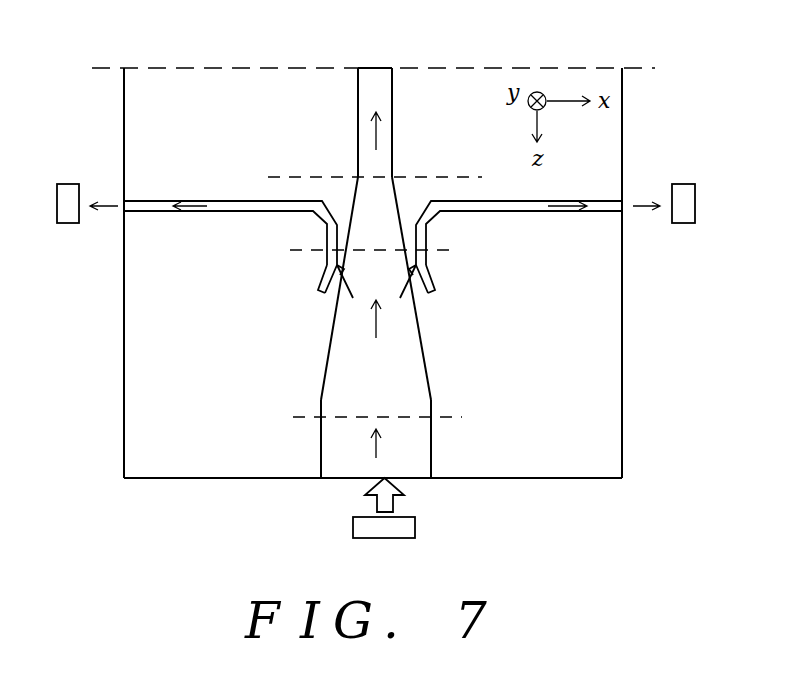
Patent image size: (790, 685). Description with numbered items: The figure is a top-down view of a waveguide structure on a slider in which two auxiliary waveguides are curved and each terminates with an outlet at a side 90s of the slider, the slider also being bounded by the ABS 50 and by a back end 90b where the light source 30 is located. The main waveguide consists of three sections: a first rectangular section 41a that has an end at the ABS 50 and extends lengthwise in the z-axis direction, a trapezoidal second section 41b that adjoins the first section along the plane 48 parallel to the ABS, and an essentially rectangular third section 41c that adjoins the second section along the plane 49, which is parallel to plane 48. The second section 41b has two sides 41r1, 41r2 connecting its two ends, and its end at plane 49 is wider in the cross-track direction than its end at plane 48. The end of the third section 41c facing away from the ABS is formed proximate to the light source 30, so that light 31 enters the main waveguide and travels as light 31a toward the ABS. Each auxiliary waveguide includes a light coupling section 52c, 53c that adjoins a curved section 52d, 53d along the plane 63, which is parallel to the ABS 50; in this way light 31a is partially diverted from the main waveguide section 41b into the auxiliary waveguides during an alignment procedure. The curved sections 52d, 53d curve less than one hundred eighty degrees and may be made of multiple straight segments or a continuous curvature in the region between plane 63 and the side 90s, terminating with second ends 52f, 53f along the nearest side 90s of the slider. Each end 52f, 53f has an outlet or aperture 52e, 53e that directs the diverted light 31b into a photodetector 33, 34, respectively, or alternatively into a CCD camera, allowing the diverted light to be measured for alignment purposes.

The light source 30 is at (415, 528).
The light 31 is at (377, 505).
The light in main waveguide 31a is at (377, 143).
The diverted light 31b is at (193, 203).
The photodetector 33 is at (72, 190).
The photodetector 34 is at (686, 190).
The first rectangular section 41a is at (373, 77).
The second section 41b is at (379, 288).
The third section 41c is at (331, 456).
The side of second section 41r1 is at (332, 330).
The side of second section 41r2 is at (425, 361).
The plane 48 is at (376, 180).
The plane 49 is at (378, 420).
The ABS 50 is at (373, 72).
The light coupling section 52c is at (326, 270).
The curved section 52d is at (218, 208).
The left branch outlet 52e is at (122, 203).
The second end 52f is at (320, 290).
The light coupling section 53c is at (427, 272).
The curved section 53d is at (527, 211).
The right branch outlet 53e is at (622, 204).
The second end 53f is at (433, 292).
The plane 63 is at (374, 254).
The housing bottom wall 90b is at (140, 480).
The side of slider 90s is at (124, 318).